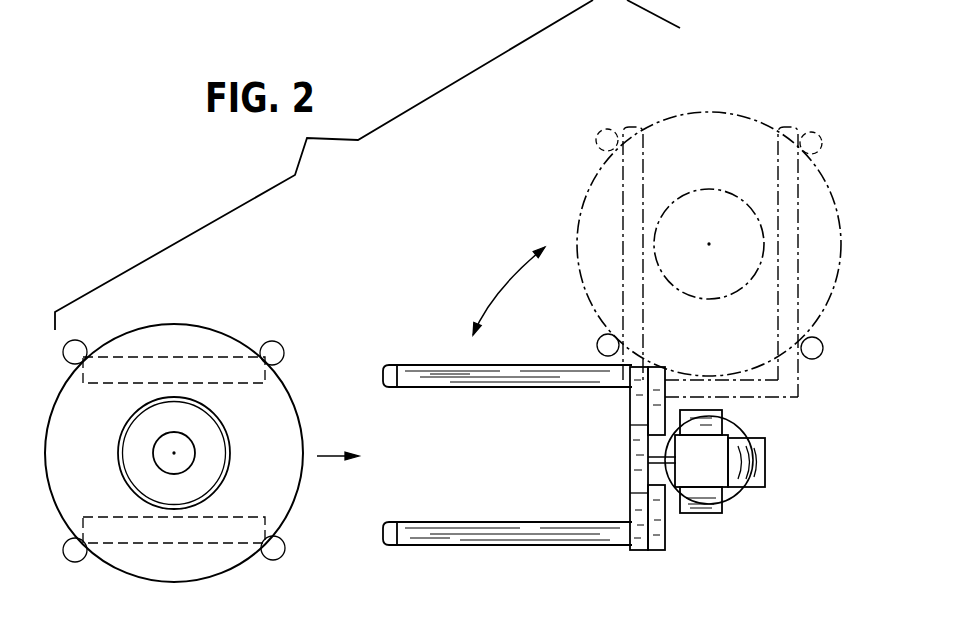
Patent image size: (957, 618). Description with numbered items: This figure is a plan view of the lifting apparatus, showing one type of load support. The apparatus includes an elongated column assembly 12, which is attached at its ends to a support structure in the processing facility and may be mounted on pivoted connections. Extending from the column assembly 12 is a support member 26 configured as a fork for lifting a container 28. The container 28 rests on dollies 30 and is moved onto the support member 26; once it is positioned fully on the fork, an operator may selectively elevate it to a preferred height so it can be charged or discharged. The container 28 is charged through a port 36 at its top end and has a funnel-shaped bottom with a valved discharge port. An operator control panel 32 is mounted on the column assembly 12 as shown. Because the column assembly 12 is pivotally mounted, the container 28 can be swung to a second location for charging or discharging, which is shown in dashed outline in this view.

The column assembly 12 is at (732, 493).
The support member 26 is at (623, 183).
The container 28 is at (167, 584).
The dollies 30 is at (281, 351).
The operator control panel 32 is at (767, 462).
The port 36 is at (175, 441).